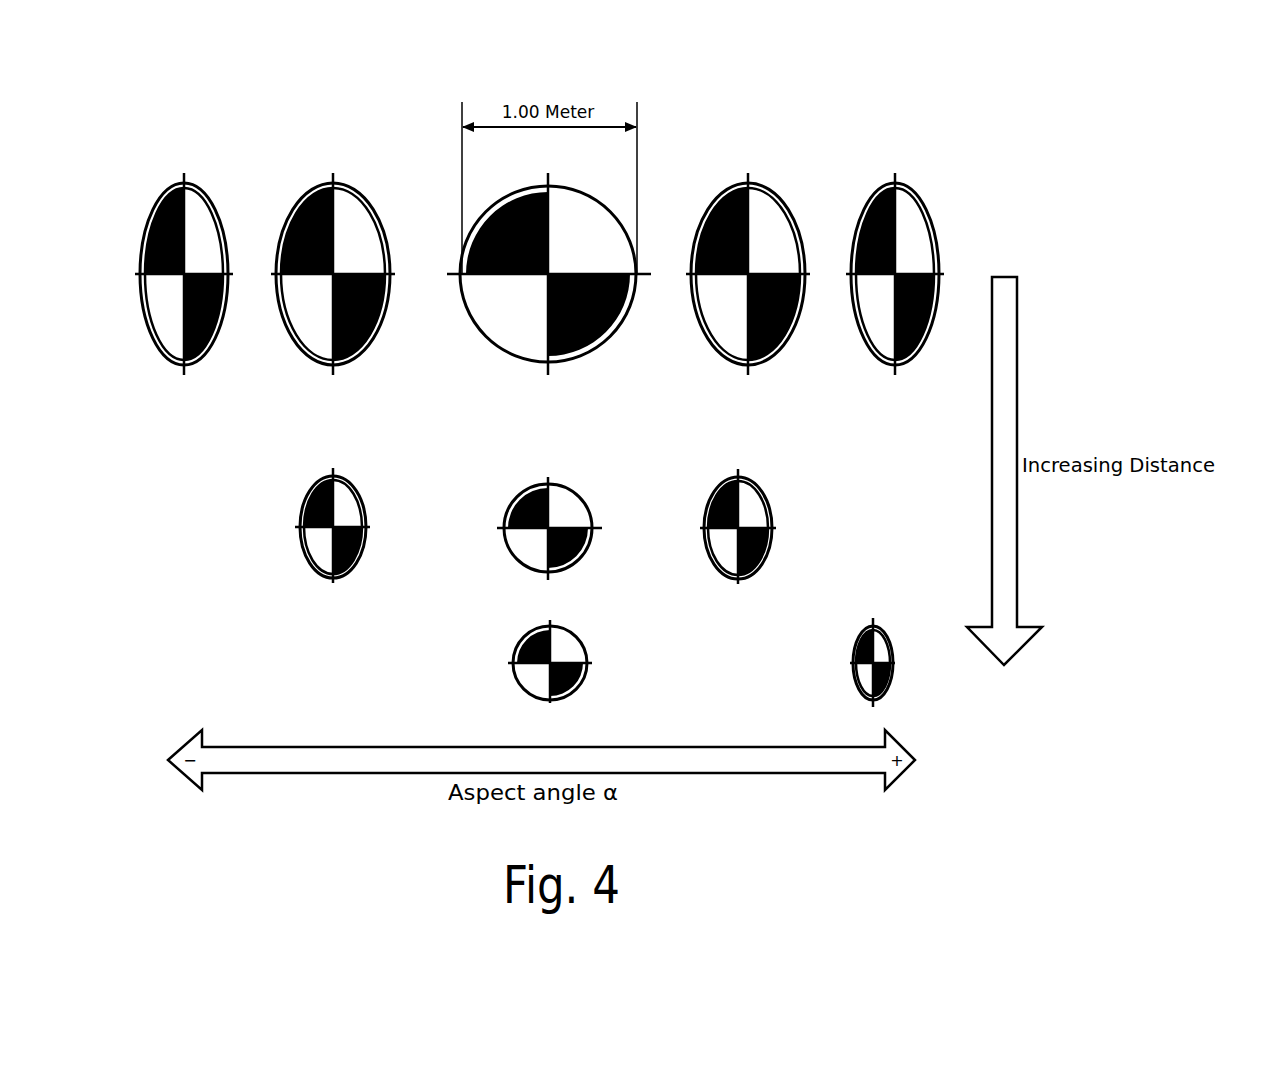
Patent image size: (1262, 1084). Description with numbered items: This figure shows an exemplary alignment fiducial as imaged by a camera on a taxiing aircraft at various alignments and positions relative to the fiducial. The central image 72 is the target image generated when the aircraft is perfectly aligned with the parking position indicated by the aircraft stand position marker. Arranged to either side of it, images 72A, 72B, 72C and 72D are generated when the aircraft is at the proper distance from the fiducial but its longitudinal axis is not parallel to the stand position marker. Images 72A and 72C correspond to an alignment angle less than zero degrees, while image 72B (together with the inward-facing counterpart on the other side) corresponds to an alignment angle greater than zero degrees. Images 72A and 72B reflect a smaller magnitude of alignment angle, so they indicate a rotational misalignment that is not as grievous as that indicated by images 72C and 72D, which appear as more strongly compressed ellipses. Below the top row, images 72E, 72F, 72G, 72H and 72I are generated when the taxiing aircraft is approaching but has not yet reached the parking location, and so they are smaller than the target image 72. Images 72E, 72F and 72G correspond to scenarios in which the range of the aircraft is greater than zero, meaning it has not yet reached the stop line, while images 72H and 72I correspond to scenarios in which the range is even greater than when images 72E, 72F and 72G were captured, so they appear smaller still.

The image 72 is at (664, 153).
The image 72A is at (324, 153).
The image 72B is at (752, 153).
The image 72C is at (173, 153).
The image 72D is at (899, 153).
The image 72E is at (585, 484).
The image 72F is at (364, 484).
The image 72G is at (773, 484).
The image 72H is at (591, 634).
The image 72I is at (903, 641).